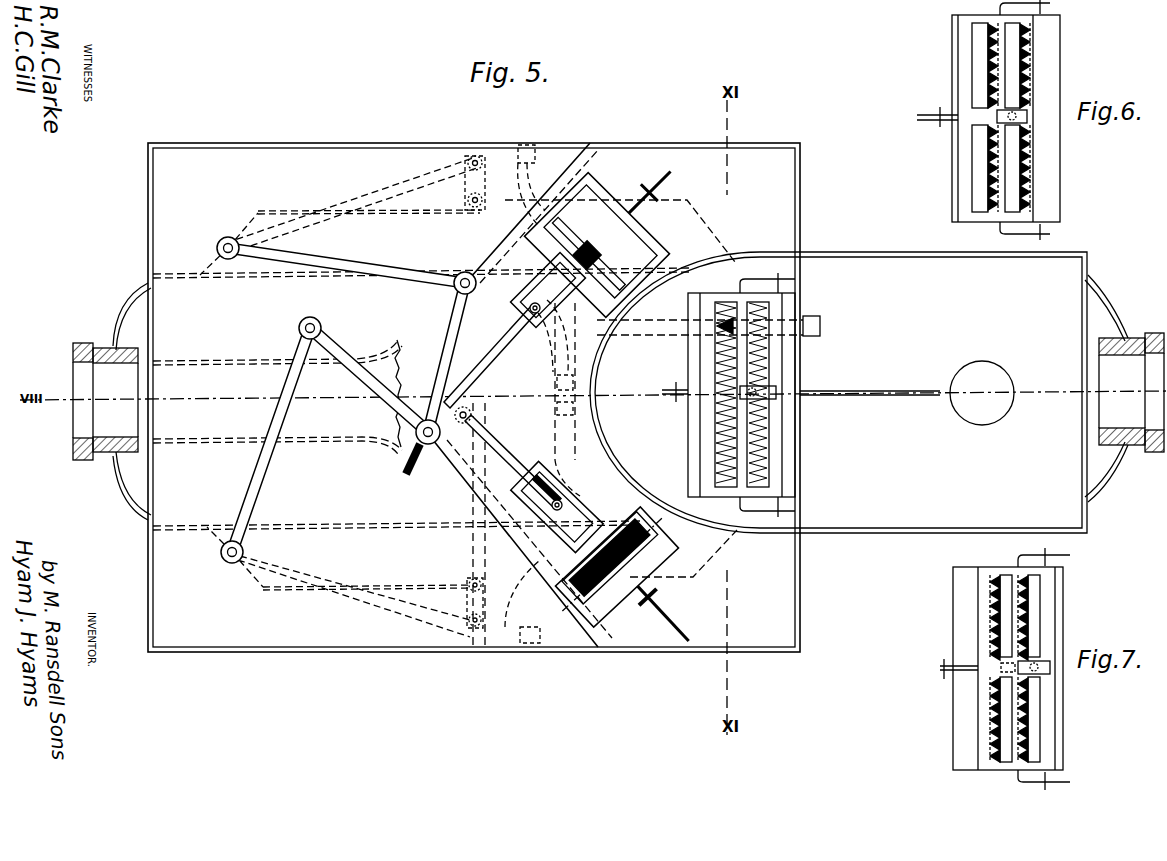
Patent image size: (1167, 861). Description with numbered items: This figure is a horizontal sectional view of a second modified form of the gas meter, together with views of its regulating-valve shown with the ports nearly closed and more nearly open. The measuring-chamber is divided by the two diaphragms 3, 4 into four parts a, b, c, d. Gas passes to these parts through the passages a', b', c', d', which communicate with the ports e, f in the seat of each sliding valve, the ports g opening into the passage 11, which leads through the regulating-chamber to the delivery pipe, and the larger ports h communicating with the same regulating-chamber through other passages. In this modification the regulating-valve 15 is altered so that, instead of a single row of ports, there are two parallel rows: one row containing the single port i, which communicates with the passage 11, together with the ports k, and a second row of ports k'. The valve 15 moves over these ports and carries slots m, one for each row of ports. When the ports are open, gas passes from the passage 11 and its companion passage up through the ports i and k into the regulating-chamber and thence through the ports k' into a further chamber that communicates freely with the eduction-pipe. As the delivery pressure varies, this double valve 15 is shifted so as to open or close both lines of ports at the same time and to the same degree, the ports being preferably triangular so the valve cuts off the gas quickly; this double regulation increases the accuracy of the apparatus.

In FIG. 5, the measuring-chamber part a is at (277, 461).
In FIG. 5, the measuring-chamber part b is at (396, 564).
In FIG. 5, the measuring-chamber part c is at (277, 382).
In FIG. 5, the measuring-chamber part d is at (421, 234).
In FIG. 5, the passage a' is at (551, 399).
In FIG. 5, the passage b' is at (548, 336).
In FIG. 5, the passage c' is at (505, 185).
In FIG. 5, the passage d' is at (503, 594).
In FIG. 5, the port e is at (530, 510).
In FIG. 5, the port f is at (566, 553).
In FIG. 5, the port g is at (546, 535).
In FIG. 5, the port h is at (542, 635).
In FIG. 5, the port i is at (706, 318).
In FIG. 6, the port i is at (985, 51).
In FIG. 7, the port i is at (995, 598).
In FIG. 6, the port k is at (972, 173).
In FIG. 7, the port k is at (985, 719).
In FIG. 5, the port k' is at (786, 394).
In FIG. 6, the port k' is at (1046, 65).
In FIG. 7, the port k' is at (1052, 617).
In FIG. 5, the slot m is at (716, 473).
In FIG. 5, the diaphragm 3 is at (438, 592).
In FIG. 5, the diaphragm 4 is at (294, 224).
In FIG. 5, the passage 11 is at (668, 330).
In FIG. 5, the regulating-valve 15 is at (715, 418).
In FIG. 6, the regulating-valve 15 is at (963, 183).
In FIG. 7, the regulating-valve 15 is at (991, 632).